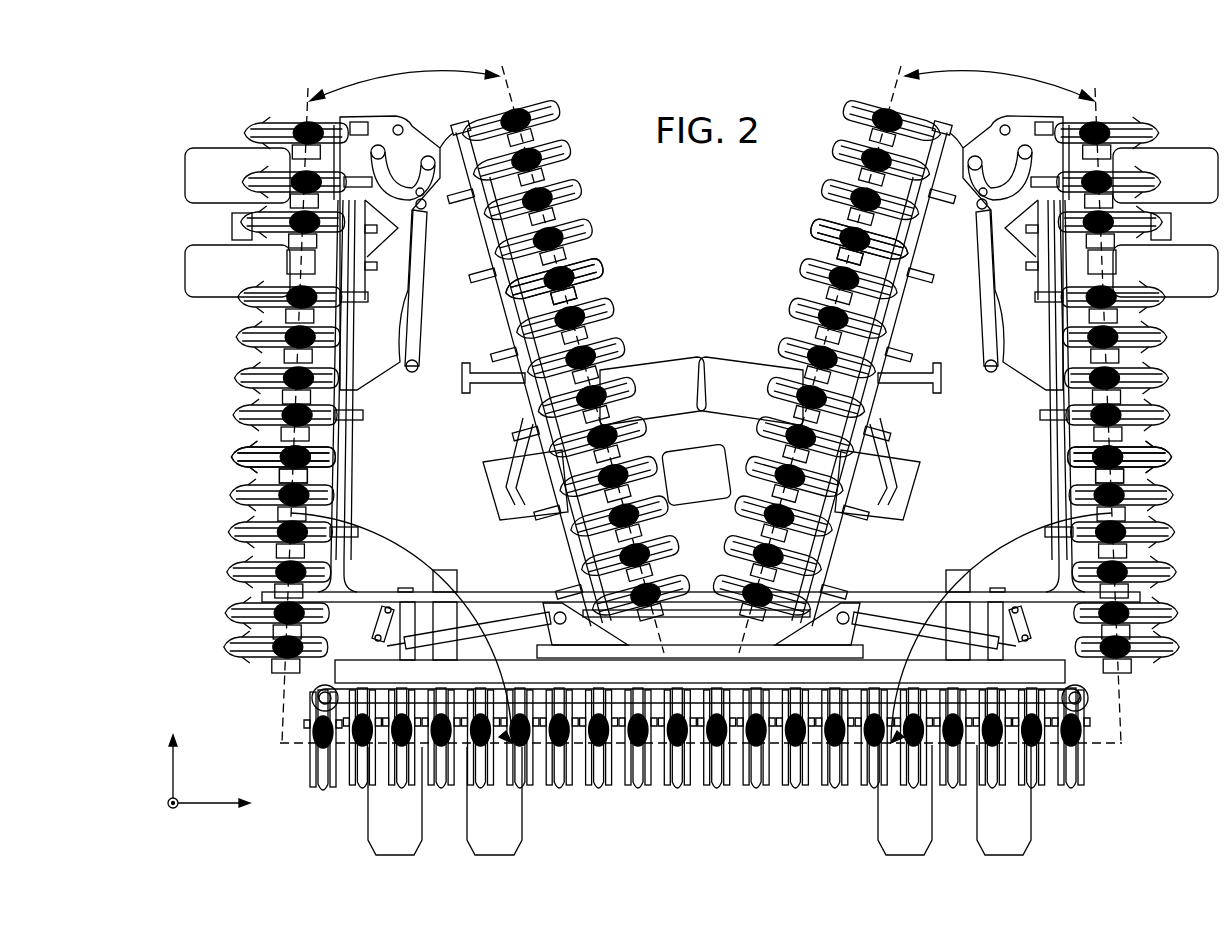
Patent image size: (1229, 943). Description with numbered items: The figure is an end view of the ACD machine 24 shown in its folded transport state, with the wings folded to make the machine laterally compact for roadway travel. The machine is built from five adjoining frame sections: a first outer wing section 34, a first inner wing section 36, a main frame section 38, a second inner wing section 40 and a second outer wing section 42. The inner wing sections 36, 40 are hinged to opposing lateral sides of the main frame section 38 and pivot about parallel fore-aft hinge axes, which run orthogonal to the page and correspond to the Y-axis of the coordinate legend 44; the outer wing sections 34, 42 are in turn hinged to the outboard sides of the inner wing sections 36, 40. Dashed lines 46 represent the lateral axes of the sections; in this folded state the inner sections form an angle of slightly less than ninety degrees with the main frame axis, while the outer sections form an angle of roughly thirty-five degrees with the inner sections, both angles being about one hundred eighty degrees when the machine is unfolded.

The ACD machine 24 is at (283, 95).
The first outer wing section 34 is at (556, 112).
The first inner wing section 36 is at (256, 133).
The main frame section 38 is at (322, 790).
The second inner wing section 40 is at (1150, 140).
The second outer wing section 42 is at (850, 107).
The coordinate legend 44 is at (180, 770).
The dashed lines 46 is at (268, 447).